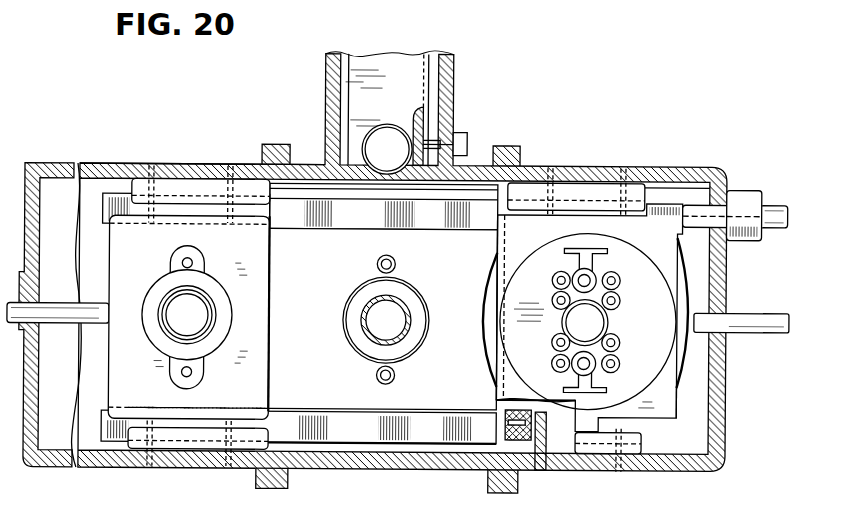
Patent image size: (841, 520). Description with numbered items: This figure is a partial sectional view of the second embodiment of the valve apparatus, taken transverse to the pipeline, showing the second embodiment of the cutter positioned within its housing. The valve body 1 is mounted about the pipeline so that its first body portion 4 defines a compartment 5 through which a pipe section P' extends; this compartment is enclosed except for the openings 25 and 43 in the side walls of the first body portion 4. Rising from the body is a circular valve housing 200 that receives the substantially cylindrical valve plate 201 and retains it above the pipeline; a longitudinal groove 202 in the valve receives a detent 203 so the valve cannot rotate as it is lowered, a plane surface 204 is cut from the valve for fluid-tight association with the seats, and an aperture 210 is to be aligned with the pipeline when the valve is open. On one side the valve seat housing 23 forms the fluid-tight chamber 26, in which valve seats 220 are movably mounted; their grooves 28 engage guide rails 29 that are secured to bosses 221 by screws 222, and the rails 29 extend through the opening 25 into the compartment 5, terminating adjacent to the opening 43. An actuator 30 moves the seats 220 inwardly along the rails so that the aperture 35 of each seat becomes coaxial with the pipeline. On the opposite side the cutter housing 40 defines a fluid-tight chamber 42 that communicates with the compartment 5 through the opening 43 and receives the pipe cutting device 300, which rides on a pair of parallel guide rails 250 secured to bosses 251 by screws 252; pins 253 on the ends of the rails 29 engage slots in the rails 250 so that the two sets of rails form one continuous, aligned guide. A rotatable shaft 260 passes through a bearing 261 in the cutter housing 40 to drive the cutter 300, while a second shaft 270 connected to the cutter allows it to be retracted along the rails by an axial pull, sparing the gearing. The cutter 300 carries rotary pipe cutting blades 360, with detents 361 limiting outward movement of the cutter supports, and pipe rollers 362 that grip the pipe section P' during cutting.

The valve body 1 is at (399, 482).
The first body portion 4 is at (306, 162).
The compartment 5 is at (430, 372).
The valve seat housing 23 is at (110, 162).
The opening 25 is at (291, 468).
The chamber 26 is at (46, 251).
The grooves 28 is at (220, 406).
The guide rails 29 is at (291, 227).
The actuator 30 is at (62, 323).
The aperture 35 is at (204, 304).
The cutter housing 40 is at (574, 177).
The chamber 42 is at (680, 400).
The opening 43 is at (484, 457).
The circular valve housing 200 is at (453, 65).
The valve plate 201 is at (374, 62).
The longitudinal groove 202 is at (424, 106).
The detent 203 is at (466, 136).
The plane surface 204 is at (364, 103).
The aperture 210 is at (364, 136).
The valve seats 220 is at (152, 278).
The bosses 221 is at (180, 184).
The screws 222 is at (148, 164).
The guide rails 250 is at (661, 197).
The bosses 251 is at (616, 189).
The screws 252 is at (550, 168).
The pins 253 is at (508, 217).
The rotatable shaft 260 is at (773, 211).
The bearing 261 is at (741, 186).
The second shaft 270 is at (766, 325).
The pipe cutting device 300 is at (666, 336).
The pipe cutting blades 360 is at (596, 274).
The detents 361 is at (562, 282).
The pipe rollers 362 is at (615, 298).
The pipe section P' is at (395, 320).